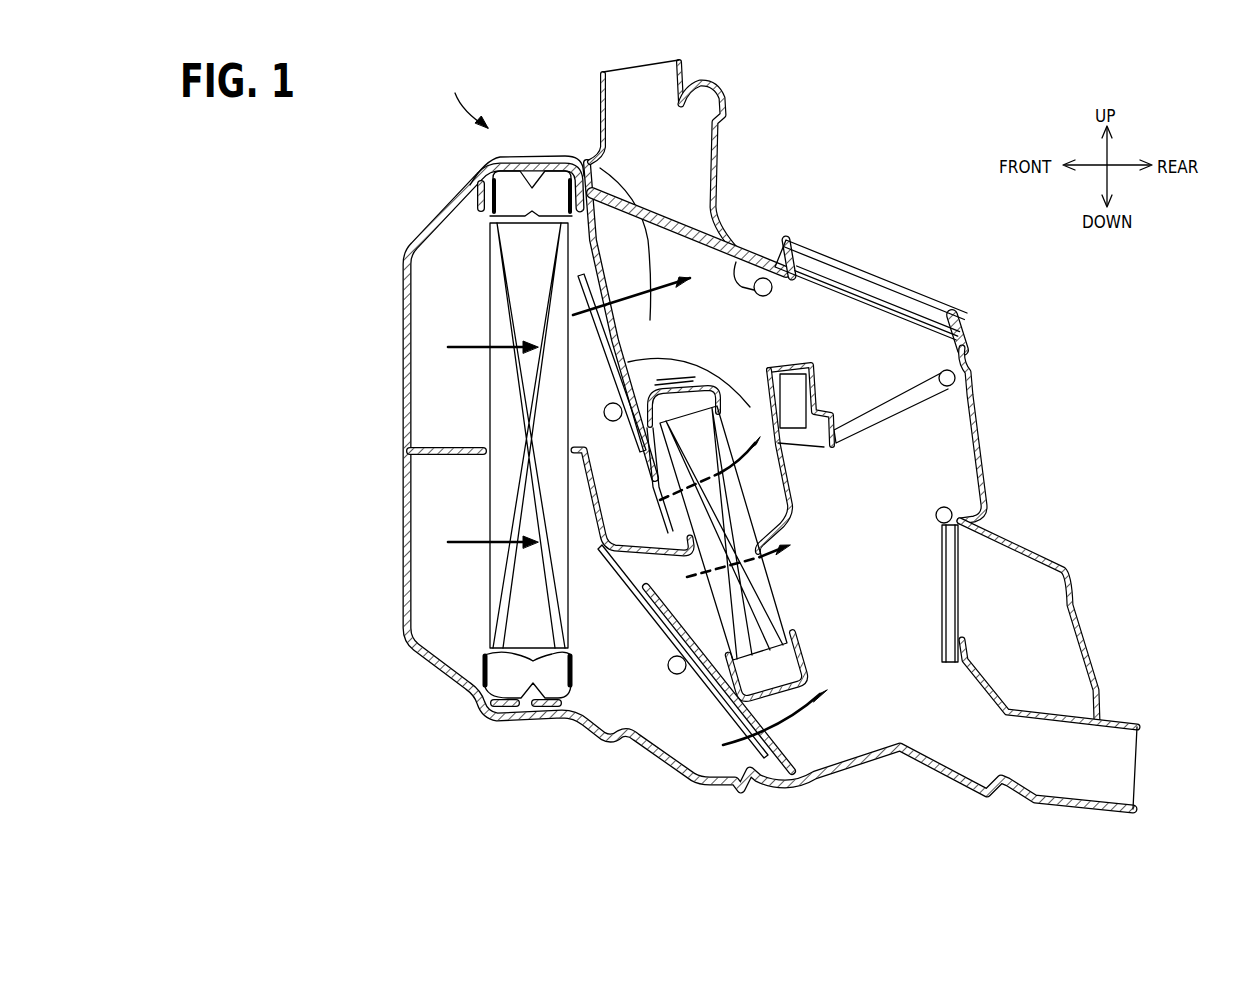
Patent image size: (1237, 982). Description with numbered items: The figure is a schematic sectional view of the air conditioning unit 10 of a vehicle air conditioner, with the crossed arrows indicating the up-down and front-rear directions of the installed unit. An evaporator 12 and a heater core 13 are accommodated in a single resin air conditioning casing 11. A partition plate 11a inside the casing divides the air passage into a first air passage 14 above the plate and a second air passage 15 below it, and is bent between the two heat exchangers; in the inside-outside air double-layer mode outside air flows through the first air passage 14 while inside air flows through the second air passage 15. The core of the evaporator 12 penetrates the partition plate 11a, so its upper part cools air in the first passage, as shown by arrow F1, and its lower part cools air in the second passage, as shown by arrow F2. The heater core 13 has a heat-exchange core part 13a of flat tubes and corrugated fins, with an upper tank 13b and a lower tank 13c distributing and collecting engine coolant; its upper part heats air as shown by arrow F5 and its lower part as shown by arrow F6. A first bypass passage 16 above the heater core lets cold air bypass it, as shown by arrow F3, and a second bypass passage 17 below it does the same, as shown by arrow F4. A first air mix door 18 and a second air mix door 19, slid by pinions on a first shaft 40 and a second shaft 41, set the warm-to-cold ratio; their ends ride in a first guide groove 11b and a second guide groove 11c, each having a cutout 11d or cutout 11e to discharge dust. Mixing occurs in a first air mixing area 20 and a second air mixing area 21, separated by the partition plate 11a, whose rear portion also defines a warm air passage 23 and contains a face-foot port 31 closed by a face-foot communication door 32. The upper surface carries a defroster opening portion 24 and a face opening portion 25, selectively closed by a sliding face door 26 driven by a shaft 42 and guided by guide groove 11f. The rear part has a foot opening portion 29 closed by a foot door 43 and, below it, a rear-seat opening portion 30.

The air conditioning unit 10 is at (464, 97).
The air conditioning casing 11 is at (430, 227).
The partition plate 11a is at (475, 537).
The first guide groove 11b is at (406, 266).
The second guide groove 11c is at (693, 590).
The cutout 11d is at (580, 488).
The cutout 11e is at (777, 770).
The guide groove 11f is at (838, 290).
The evaporator 12 is at (507, 458).
The heater core 13 is at (700, 566).
The heat-exchange core part 13a is at (755, 600).
The upper tank 13b is at (647, 384).
The lower tank 13c is at (797, 655).
The first air passage 14 is at (453, 322).
The second air passage 15 is at (447, 503).
The first bypass passage 16 is at (587, 283).
The second bypass passage 17 is at (800, 745).
The first air mix door 18 is at (645, 426).
The second air mix door 19 is at (717, 693).
The first air mixing area 20 is at (753, 340).
The second air mixing area 21 is at (893, 566).
The warm air passage 23 is at (600, 366).
The defroster opening portion 24 is at (640, 59).
The face opening portion 25 is at (867, 270).
The face door 26 is at (683, 222).
The foot opening portion 29 is at (1027, 597).
The rear-seat opening portion 30 is at (1137, 774).
The face-foot port 31 is at (870, 405).
The face-foot communication door 32 is at (927, 368).
The first shaft 40 is at (603, 412).
The second shaft 41 is at (670, 683).
The shaft 42 is at (753, 290).
The foot door 43 is at (960, 618).
The arrow F1 is at (460, 338).
The arrow F2 is at (452, 544).
The arrow F3 is at (595, 160).
The arrow F4 is at (820, 713).
The arrow F5 is at (790, 483).
The arrow F6 is at (790, 567).